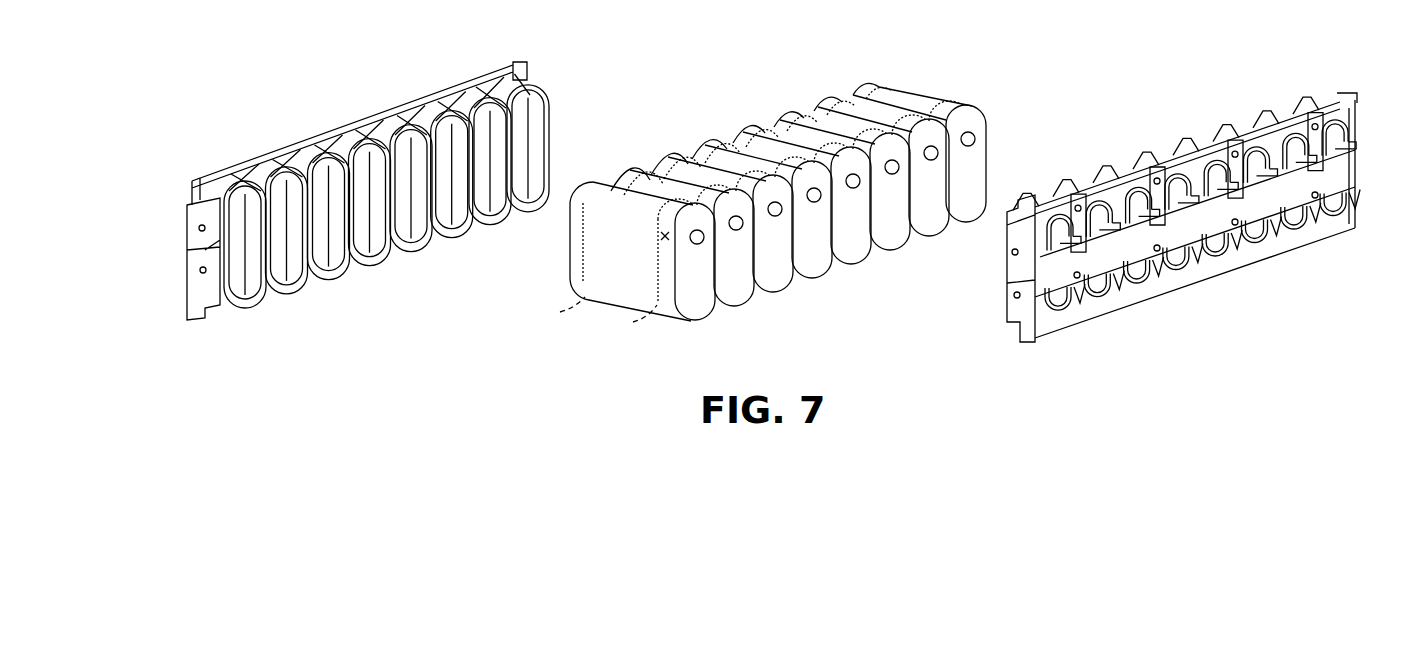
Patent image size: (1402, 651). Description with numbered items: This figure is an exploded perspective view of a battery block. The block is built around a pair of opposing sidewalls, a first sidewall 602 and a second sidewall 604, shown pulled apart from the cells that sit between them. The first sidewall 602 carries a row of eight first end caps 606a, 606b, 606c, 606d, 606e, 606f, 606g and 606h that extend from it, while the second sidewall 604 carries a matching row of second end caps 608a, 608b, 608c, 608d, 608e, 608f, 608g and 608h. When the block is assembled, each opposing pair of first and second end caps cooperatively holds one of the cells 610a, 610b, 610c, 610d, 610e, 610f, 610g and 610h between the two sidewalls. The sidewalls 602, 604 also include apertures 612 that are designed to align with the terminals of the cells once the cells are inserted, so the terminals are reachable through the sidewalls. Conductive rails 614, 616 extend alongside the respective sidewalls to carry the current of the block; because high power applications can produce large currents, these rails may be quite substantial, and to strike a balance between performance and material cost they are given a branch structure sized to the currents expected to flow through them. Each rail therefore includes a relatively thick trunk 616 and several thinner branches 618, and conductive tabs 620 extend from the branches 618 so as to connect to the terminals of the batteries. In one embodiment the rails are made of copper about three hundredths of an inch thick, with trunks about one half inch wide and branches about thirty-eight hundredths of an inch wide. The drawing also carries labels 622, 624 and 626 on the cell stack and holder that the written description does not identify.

The first sidewall 602 is at (1325, 80).
The second sidewall 604 is at (522, 58).
The first end cap 606a is at (1025, 203).
The first end cap 606b is at (1070, 192).
The first end cap 606c is at (1107, 175).
The first end cap 606d is at (1150, 158).
The first end cap 606e is at (1186, 146).
The first end cap 606f is at (1226, 133).
The first end cap 606g is at (1260, 112).
The first end cap 606h is at (1303, 107).
The second end cap 608a is at (244, 306).
The second end cap 608b is at (281, 296).
The second end cap 608c is at (323, 281).
The second end cap 608d is at (360, 140).
The second end cap 608e is at (413, 248).
The second end cap 608f is at (437, 116).
The second end cap 608g is at (490, 223).
The second end cap 608h is at (535, 86).
The cell 610a is at (698, 308).
The cell 610b is at (733, 293).
The cell 610c is at (773, 280).
The cell 610d is at (810, 262).
The cell 610e is at (848, 248).
The cell 610f is at (892, 228).
The cell 610g is at (823, 108).
The cell 610h is at (862, 92).
The aperture 612 is at (1254, 246).
The conductive rail 614 is at (1043, 278).
The conductive rail trunk 616 is at (218, 267).
The branch 618 is at (1112, 257).
The conductive tab 620 is at (1318, 162).
The contact tab 622 is at (1137, 172).
The alignment marker 624 is at (660, 226).
The phantom cell outline 626 is at (574, 300).